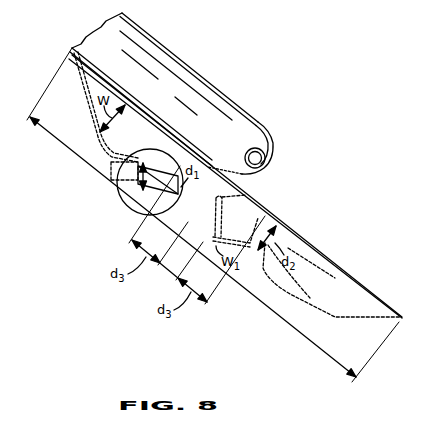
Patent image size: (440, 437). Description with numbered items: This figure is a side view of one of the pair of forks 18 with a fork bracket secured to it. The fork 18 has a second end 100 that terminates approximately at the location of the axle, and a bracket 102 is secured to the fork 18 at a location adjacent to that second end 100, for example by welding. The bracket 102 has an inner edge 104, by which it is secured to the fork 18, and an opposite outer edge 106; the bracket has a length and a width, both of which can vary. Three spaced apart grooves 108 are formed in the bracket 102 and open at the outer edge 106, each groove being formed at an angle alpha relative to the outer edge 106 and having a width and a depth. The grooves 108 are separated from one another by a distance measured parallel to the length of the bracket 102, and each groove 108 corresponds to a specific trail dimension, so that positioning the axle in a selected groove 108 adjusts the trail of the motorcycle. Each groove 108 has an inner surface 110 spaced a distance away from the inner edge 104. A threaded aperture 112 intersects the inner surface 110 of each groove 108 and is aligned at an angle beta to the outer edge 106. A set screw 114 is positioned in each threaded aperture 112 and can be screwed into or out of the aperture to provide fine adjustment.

The fork 18 is at (173, 67).
The second end 100 is at (260, 127).
The bracket 102 is at (297, 237).
The inner edge 104 is at (280, 191).
The outer edge 106 is at (313, 345).
The groove 108 is at (263, 272).
The inner surface 110 is at (195, 137).
The threaded aperture 112 is at (160, 162).
The set screw 114 is at (117, 177).